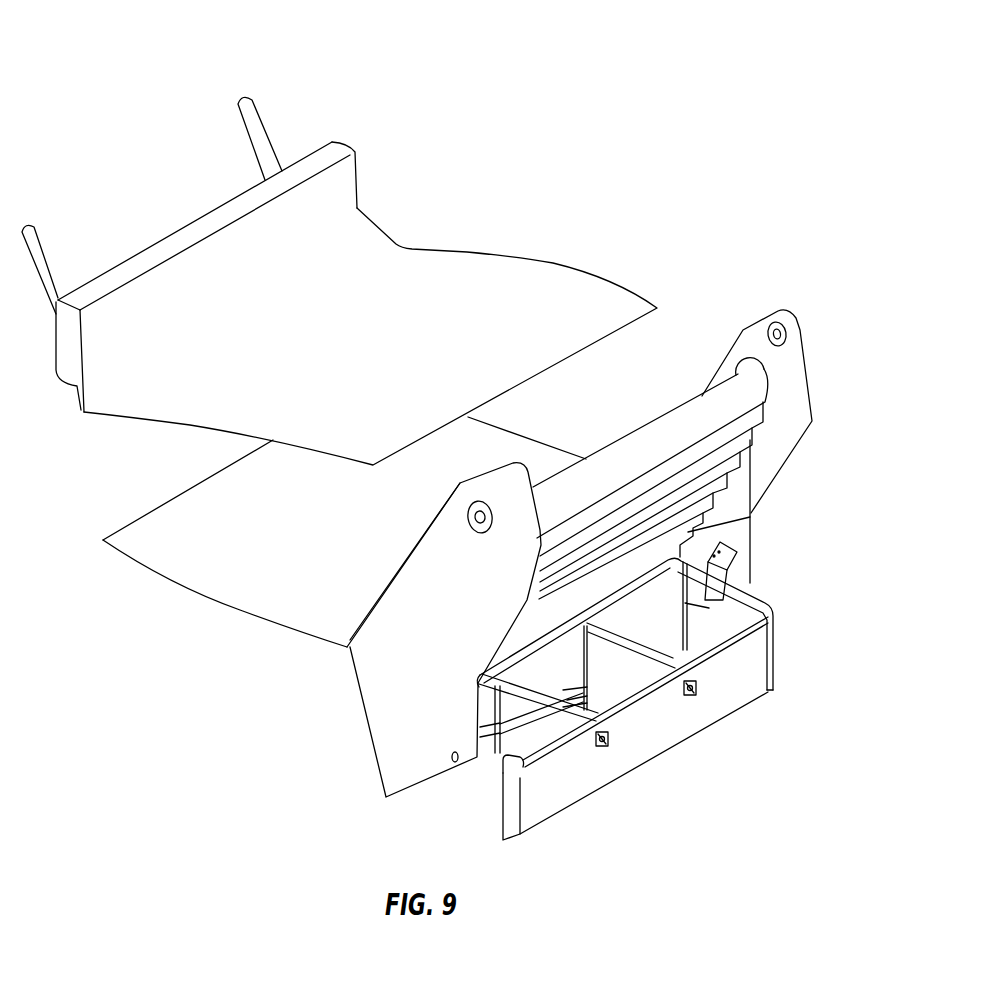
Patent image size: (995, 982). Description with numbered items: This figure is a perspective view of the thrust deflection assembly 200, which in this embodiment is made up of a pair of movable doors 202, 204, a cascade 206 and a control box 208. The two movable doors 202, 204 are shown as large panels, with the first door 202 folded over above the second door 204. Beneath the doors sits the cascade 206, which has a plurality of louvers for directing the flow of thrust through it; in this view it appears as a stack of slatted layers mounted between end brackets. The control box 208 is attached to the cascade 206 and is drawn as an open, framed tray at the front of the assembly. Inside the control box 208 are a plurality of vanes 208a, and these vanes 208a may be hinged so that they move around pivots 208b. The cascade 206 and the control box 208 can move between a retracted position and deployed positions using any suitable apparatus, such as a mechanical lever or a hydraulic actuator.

The thrust deflection assembly 200 is at (203, 47).
The movable door 202 is at (562, 256).
The movable door 204 is at (240, 612).
The cascade 206 is at (777, 397).
The control box 208 is at (786, 666).
The vane 208a is at (538, 725).
The pivot 208b is at (696, 693).